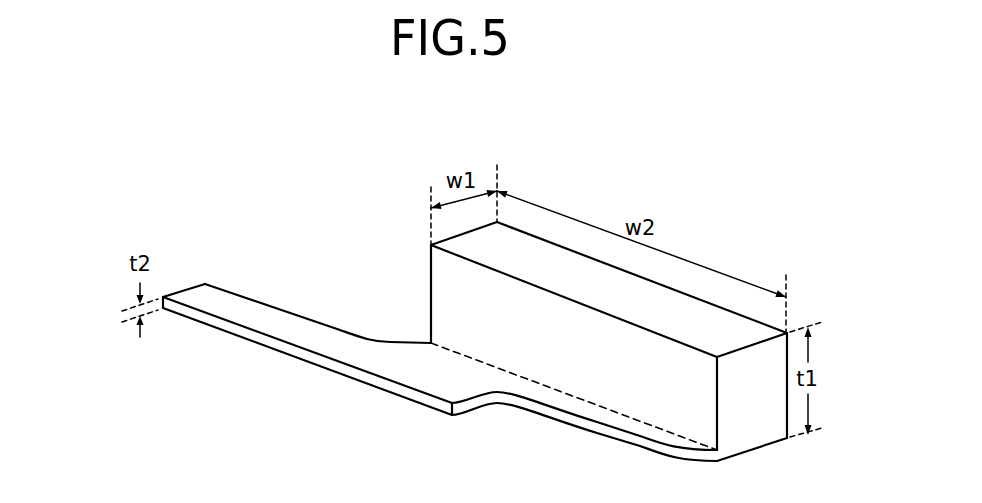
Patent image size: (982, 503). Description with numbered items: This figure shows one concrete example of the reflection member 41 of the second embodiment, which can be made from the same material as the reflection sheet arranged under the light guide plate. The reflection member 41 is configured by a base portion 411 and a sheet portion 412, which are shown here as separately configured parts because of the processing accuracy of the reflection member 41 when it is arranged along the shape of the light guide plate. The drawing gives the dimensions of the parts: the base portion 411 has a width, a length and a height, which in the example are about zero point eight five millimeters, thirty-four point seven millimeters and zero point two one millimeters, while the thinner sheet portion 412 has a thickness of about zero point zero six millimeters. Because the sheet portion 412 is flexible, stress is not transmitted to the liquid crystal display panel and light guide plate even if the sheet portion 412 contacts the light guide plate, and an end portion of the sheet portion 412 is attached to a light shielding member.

The reflection member 41 is at (115, 182).
The base portion 411 is at (443, 295).
The sheet portion 412 is at (313, 328).